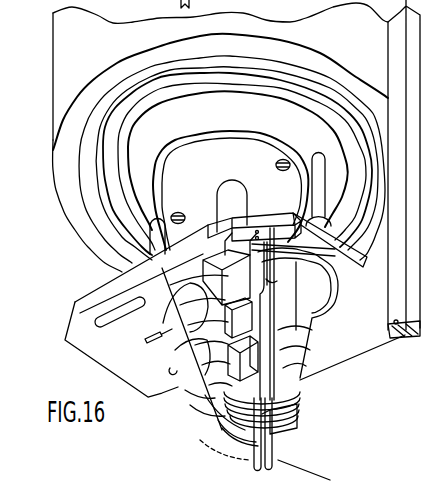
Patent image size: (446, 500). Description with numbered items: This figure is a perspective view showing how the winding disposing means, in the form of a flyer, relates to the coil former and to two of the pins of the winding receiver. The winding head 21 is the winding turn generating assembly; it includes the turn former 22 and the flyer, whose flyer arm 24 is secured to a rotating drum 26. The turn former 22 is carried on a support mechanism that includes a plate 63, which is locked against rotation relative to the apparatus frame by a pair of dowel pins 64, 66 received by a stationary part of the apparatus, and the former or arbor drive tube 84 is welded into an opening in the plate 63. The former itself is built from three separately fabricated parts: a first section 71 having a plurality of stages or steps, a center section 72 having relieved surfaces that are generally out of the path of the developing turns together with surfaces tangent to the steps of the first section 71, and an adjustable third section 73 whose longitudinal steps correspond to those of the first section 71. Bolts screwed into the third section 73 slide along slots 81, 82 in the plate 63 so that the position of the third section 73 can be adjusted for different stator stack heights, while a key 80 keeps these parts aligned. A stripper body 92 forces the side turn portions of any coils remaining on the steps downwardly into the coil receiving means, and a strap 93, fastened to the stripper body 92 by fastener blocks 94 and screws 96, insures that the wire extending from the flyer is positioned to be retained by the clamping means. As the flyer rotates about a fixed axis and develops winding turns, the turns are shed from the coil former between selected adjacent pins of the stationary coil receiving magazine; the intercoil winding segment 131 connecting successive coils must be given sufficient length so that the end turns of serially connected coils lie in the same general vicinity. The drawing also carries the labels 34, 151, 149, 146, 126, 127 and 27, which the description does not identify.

The winding head 21 is at (52, 77).
The rotating drum 26 is at (62, 46).
The flyer arm 24 is at (406, 125).
The bracket 34 is at (404, 337).
The dowel pin 64 is at (156, 234).
The dowel pin 66 is at (321, 185).
The former or arbor drive tube 84 is at (225, 191).
The plate 63 is at (103, 297).
The slot 82 is at (125, 314).
The key 80 is at (147, 345).
The slot 81 is at (170, 370).
The screw 96 is at (257, 231).
The fastener block 94 is at (252, 252).
The stripper body 92 is at (277, 283).
The third section 73 is at (193, 383).
The cam blade 151 is at (164, 326).
The cam edge 149 is at (207, 408).
The first section 71 is at (292, 376).
The lower block 146 is at (300, 422).
The prong 126 is at (252, 468).
The prong 127 is at (268, 452).
The axis 27 is at (283, 458).
The coil former 22 is at (320, 348).
The intercoil winding segment 131 is at (370, 353).
The strap 93 is at (330, 249).
The center section 72 is at (212, 248).